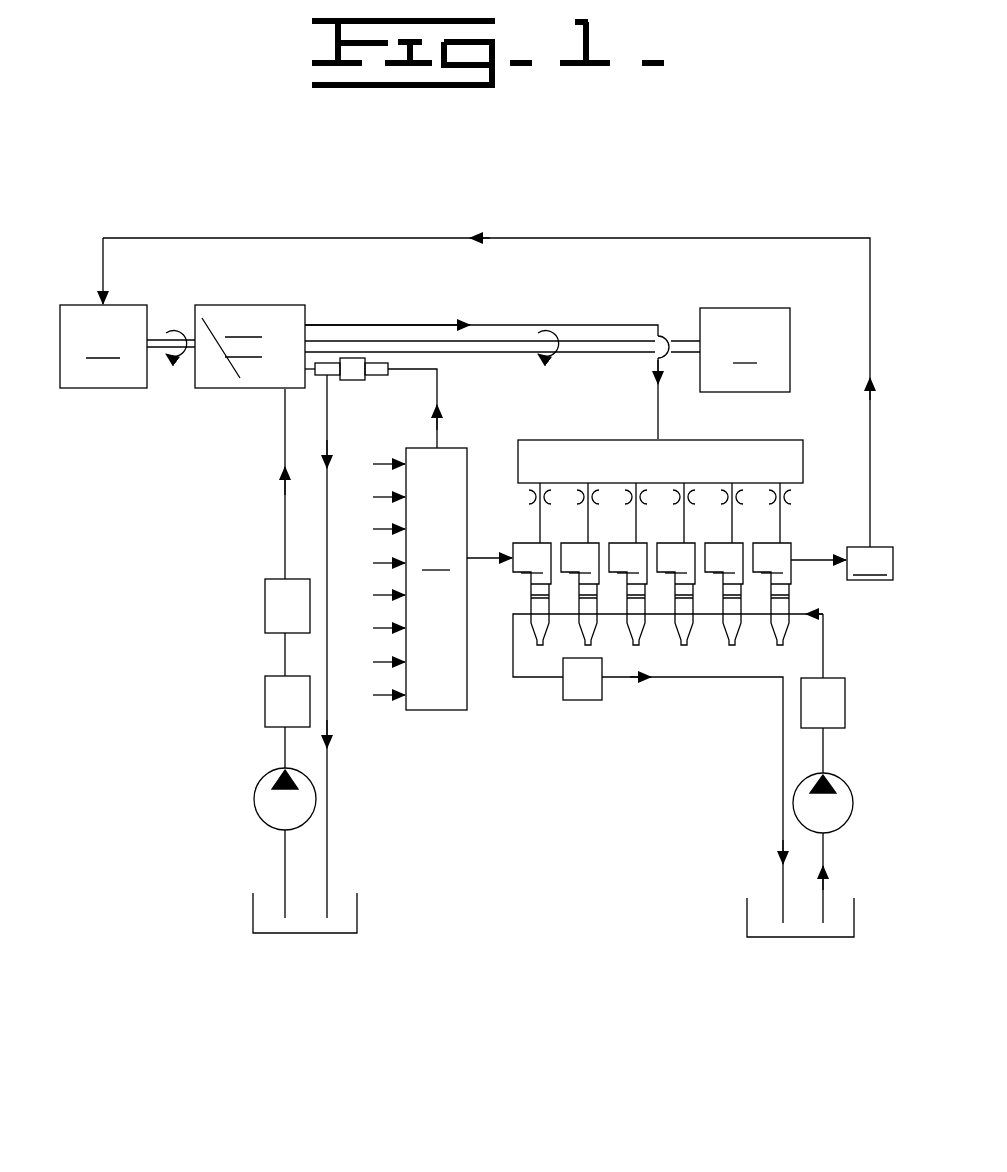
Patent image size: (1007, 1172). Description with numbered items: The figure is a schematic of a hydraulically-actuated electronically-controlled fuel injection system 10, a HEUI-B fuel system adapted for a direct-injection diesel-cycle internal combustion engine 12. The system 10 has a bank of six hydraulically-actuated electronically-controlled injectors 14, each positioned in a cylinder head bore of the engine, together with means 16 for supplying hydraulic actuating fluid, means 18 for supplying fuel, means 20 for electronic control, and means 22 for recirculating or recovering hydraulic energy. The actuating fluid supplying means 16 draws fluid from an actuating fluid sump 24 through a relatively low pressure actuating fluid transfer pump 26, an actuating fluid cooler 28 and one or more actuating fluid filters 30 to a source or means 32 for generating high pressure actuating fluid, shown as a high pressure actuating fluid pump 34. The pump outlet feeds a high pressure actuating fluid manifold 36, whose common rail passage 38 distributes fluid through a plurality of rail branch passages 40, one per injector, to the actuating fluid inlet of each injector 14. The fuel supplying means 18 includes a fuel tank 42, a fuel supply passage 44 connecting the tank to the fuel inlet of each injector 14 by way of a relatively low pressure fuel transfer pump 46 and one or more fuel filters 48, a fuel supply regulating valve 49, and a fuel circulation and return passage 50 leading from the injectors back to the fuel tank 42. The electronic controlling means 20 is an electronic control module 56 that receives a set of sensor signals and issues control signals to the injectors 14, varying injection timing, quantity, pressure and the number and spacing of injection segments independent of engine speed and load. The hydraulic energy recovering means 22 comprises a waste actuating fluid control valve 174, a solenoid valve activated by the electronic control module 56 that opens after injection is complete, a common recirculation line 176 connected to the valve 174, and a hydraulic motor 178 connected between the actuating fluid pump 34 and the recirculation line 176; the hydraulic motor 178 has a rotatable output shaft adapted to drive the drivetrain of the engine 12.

The hydraulically-actuated electronically-controlled fuel injection system 10 is at (197, 204).
The internal combustion engine 12 is at (547, 373).
The hydraulically-actuated electronically-controlled injectors 14 is at (652, 594).
The means for supplying hydraulic actuating fluid 16 is at (310, 696).
The means for supplying fuel 18 is at (706, 806).
The means for electronically controlling 20 is at (428, 606).
The means for recirculating or recovering hydraulic energy 22 is at (91, 298).
The actuating fluid sump 24 is at (357, 903).
The actuating fluid transfer pump 26 is at (262, 792).
The actuating fluid cooler 28 is at (265, 690).
The actuating fluid filters 30 is at (265, 612).
The means for generating relatively high pressure actuating fluid 32 is at (256, 293).
The high pressure actuating fluid pump 34 is at (252, 390).
The high pressure actuating fluid manifold 36 is at (660, 435).
The common rail passage 38 is at (545, 440).
The rail branch passages 40 is at (783, 515).
The fuel tank 42 is at (747, 920).
The fuel supply passage 44 is at (823, 652).
The fuel transfer pump 46 is at (845, 779).
The fuel filters 48 is at (834, 696).
The fuel supply regulating valve 49 is at (578, 702).
The fuel circulation and return passage 50 is at (782, 835).
The electronic control module 56 is at (431, 713).
The waste actuating fluid control valve 174 is at (842, 563).
The common recirculation line 176 is at (290, 238).
The hydraulic motor 178 is at (103, 346).